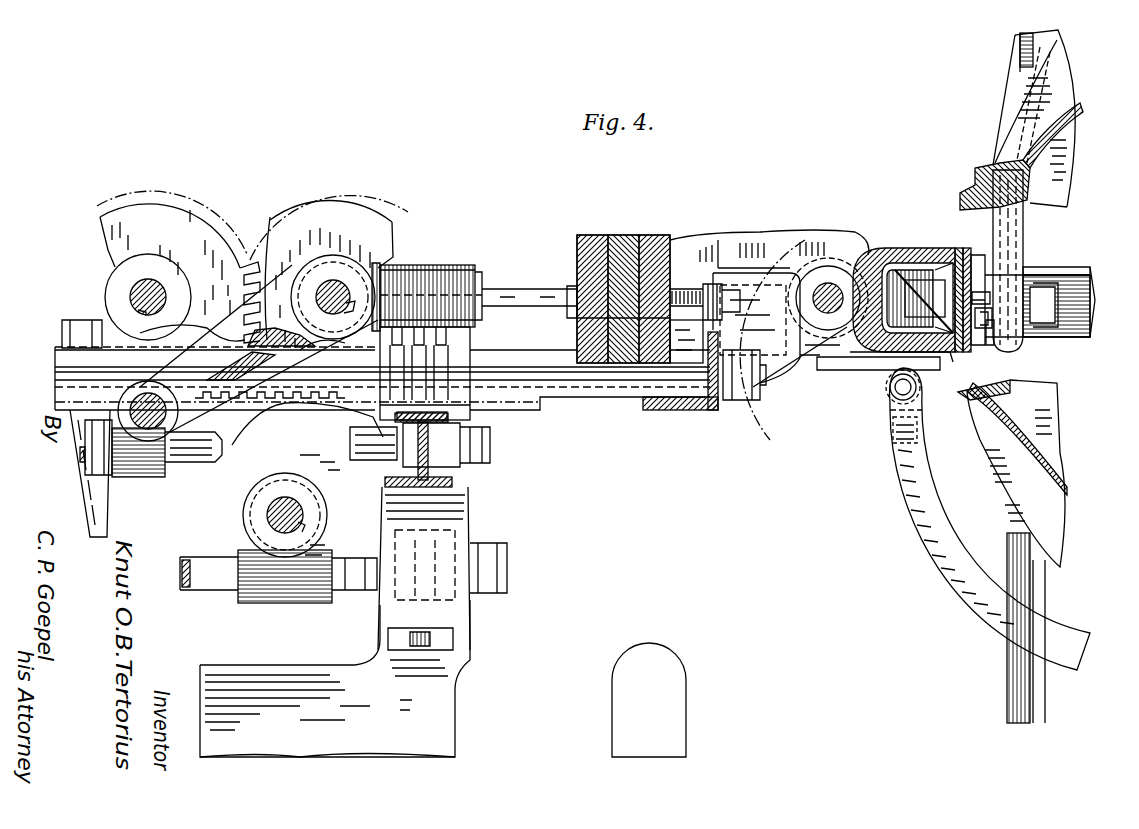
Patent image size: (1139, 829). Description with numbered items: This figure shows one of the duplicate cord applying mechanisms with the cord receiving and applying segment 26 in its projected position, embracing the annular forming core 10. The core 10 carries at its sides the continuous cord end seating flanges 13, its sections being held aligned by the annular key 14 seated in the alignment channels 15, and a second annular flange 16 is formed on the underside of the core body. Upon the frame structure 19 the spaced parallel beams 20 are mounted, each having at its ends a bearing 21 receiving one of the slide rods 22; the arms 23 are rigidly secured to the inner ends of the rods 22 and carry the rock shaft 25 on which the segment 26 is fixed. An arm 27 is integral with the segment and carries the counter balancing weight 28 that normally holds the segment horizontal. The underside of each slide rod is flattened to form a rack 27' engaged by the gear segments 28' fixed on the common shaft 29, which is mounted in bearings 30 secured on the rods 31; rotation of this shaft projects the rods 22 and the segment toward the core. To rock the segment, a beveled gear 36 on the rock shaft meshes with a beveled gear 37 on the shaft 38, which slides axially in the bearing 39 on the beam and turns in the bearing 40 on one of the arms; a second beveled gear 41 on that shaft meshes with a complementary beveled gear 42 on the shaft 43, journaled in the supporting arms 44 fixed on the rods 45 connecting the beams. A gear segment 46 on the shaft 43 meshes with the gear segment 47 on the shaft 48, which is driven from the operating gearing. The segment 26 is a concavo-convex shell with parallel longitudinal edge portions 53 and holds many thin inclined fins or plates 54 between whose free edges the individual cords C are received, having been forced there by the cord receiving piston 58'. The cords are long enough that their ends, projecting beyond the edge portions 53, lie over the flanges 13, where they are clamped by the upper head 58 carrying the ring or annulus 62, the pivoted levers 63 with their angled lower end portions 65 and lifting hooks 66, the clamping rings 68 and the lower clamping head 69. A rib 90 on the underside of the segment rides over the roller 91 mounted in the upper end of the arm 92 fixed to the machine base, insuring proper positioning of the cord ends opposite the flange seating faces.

The annular forming core 10 is at (923, 247).
The cord end seating flanges 13 is at (943, 247).
The annular key 14 is at (975, 258).
The alignment channels 15 is at (977, 298).
The second annular flange 16 is at (983, 318).
The frame structure 19 is at (423, 683).
The beams 20 is at (83, 500).
The bearing 21 is at (68, 326).
The slide rods 22 is at (78, 370).
The arms 23 is at (703, 410).
The rock shaft 25 is at (830, 285).
The cord receiving and applying segment 26 is at (1063, 352).
The arm 27 is at (769, 231).
The rack 27' is at (249, 269).
The counter balancing weight 28 is at (640, 274).
The gear segments 28' is at (248, 380).
The shaft 29 is at (270, 507).
The bearings 30 is at (240, 597).
The rods 31 is at (357, 590).
The beveled gear 36 is at (838, 372).
The beveled gear 37 is at (786, 390).
The shaft 38 is at (517, 287).
The bearing 39 is at (470, 268).
The bearing 40 is at (722, 288).
The second beveled gear 41 is at (384, 270).
The collar 42 is at (378, 266).
The shaft 43 is at (334, 280).
The supporting arms 44 is at (290, 365).
The rods 45 is at (183, 460).
The gear segment 46 is at (300, 228).
The gear segment 47 is at (176, 232).
The shaft 48 is at (146, 292).
The longitudinal edge portions 53 is at (967, 250).
The fins or plates 54 is at (907, 352).
The upper head 58 is at (1059, 118).
The cord receiving piston 58' is at (665, 686).
The ring or annulus 62 is at (993, 165).
The levers 63 is at (1021, 48).
The lower end portion 65 is at (1027, 257).
The lifting hook 66 is at (990, 346).
The clamping ring 68 is at (972, 200).
The lower clamping head 69 is at (980, 407).
The rib 90 is at (862, 372).
The roller 91 is at (917, 386).
The arm 92 is at (913, 542).
The cords C is at (1020, 261).